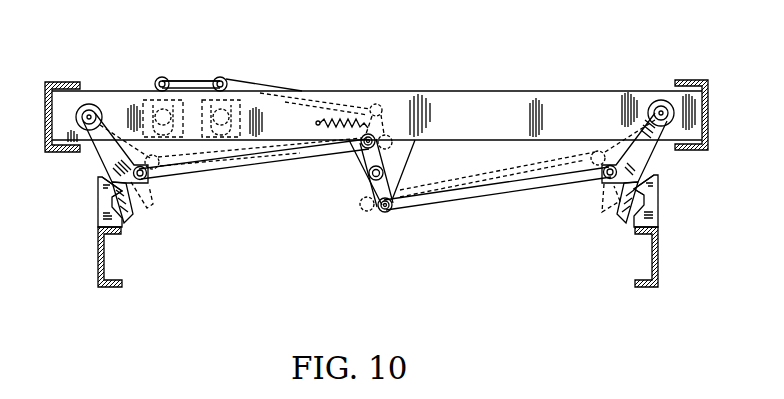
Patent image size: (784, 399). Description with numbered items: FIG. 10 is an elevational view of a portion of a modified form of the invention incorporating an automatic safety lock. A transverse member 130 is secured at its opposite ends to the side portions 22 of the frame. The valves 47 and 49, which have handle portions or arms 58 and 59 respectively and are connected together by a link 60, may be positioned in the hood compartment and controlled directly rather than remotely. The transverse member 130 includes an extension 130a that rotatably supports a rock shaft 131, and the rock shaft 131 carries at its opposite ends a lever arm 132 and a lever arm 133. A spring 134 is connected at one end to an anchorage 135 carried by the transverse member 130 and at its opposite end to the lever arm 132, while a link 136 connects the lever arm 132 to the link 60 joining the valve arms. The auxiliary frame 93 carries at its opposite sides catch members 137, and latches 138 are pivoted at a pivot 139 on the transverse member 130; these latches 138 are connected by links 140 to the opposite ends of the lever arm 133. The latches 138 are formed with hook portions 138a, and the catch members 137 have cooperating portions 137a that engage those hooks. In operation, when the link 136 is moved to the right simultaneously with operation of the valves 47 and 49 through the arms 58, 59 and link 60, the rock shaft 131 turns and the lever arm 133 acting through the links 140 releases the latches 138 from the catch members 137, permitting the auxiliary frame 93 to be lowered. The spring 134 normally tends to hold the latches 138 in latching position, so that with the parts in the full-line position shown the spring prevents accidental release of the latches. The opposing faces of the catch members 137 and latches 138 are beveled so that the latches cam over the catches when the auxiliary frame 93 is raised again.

The side portions 22 is at (72, 78).
The pivot 139 is at (98, 112).
The latches 138 is at (100, 157).
The hook portions 138a is at (130, 218).
The catch members 137 is at (100, 220).
The cooperating portions 137a is at (110, 190).
The auxiliary frame 93 is at (107, 270).
The links 140 is at (227, 167).
The valve 47 is at (177, 98).
The link 60 is at (202, 81).
The handle portion or arm 58 is at (154, 84).
The handle portion or arm 59 is at (225, 80).
The valve 49 is at (232, 98).
The link 136 is at (257, 88).
The anchorage 135 is at (318, 120).
The spring 134 is at (352, 106).
The lever arm 132 is at (385, 113).
The lever arm 133 is at (372, 199).
The rock shaft 131 is at (368, 173).
The extension 130a is at (403, 160).
The transverse member 130 is at (490, 130).